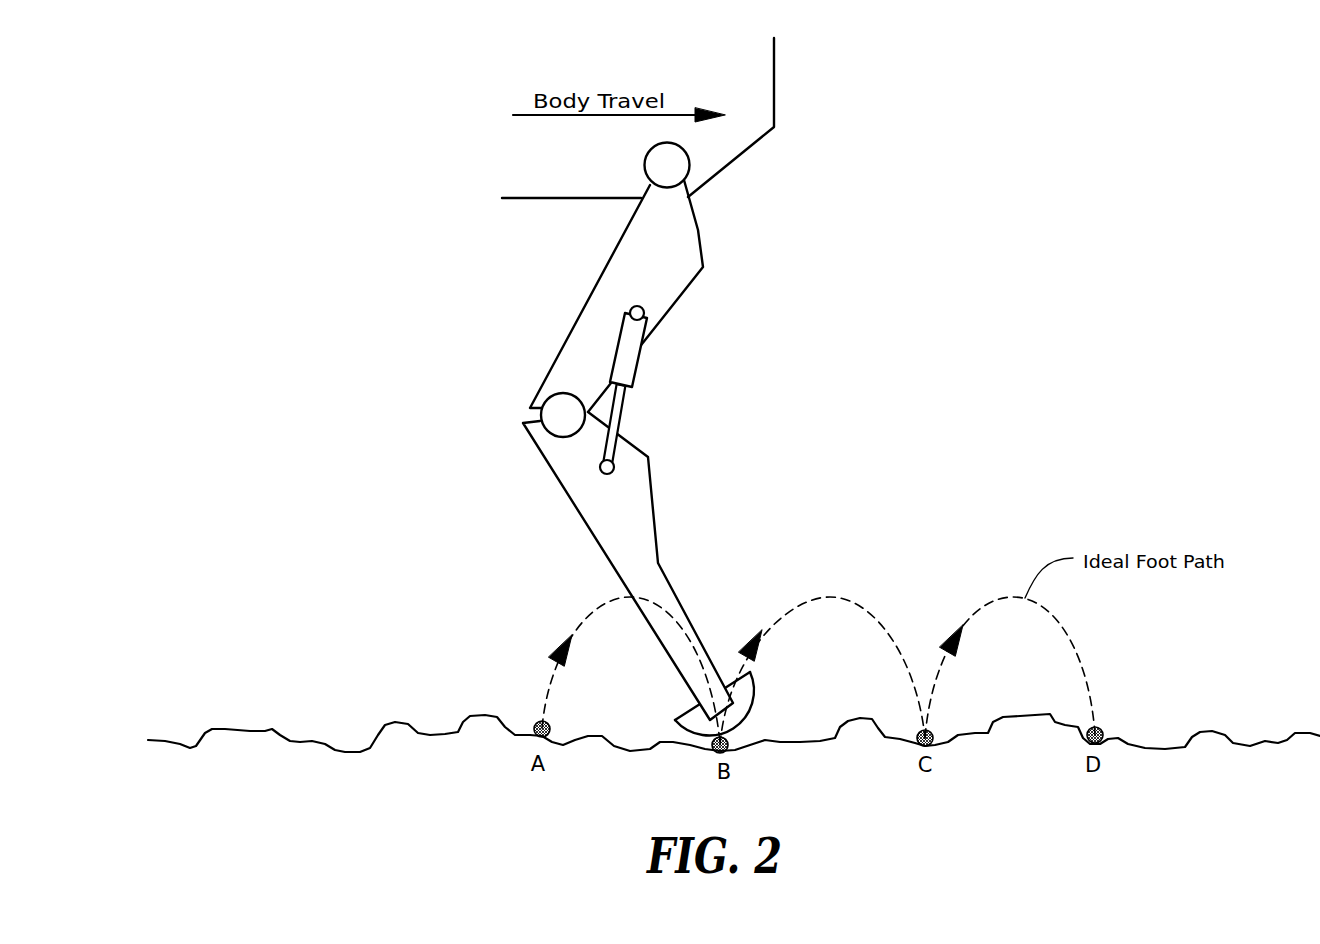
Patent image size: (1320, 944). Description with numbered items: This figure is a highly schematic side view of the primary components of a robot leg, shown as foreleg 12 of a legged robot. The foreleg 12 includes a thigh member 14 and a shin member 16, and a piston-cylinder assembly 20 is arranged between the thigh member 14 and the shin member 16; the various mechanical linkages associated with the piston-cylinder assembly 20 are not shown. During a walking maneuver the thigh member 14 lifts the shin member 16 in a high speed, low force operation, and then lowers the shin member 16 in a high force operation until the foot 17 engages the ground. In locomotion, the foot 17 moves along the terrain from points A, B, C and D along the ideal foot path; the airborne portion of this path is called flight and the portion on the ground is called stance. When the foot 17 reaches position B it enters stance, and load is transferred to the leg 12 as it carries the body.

The foreleg 12 is at (709, 439).
The thigh member 14 is at (687, 261).
The shin member 16 is at (630, 525).
The foot 17 is at (738, 692).
The piston-cylinder assembly 20 is at (633, 360).